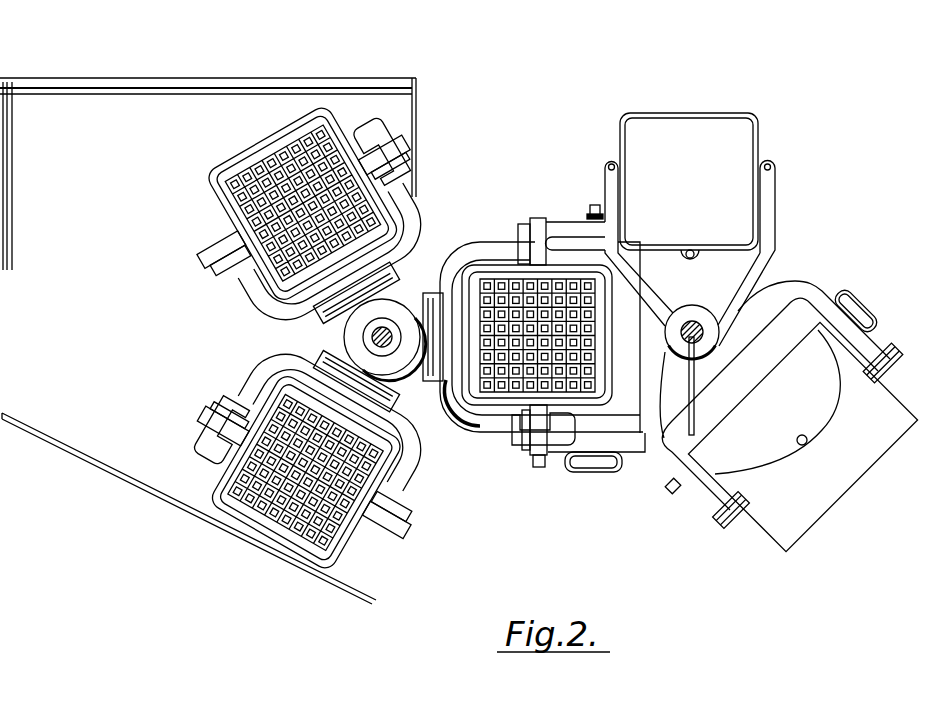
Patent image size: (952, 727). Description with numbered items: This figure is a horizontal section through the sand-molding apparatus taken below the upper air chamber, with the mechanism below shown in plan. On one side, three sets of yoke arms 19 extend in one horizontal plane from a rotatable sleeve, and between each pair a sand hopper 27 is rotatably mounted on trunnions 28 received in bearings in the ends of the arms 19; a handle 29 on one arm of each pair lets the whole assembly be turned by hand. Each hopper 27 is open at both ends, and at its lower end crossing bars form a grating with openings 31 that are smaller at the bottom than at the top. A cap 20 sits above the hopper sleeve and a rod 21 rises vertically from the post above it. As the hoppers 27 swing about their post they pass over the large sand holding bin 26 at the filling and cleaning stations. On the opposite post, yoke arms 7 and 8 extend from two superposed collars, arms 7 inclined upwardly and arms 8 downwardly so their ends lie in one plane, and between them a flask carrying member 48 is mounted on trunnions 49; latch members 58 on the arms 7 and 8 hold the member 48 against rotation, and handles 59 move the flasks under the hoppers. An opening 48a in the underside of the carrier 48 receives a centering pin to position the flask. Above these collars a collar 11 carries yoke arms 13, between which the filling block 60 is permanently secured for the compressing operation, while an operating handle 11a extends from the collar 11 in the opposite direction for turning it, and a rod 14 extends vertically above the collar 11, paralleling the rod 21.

The yoke arms 7 is at (595, 446).
The yoke arms 8 is at (818, 298).
The collar 11 is at (707, 314).
The operating handle 11a is at (694, 420).
The yoke arms 13 is at (618, 215).
The rod 14 is at (689, 322).
The yoke arms 19 is at (455, 254).
The cap 20 is at (380, 330).
The rod 21 is at (378, 307).
The sand holding bin 26 is at (155, 474).
The sand hopper 27 is at (243, 170).
The trunnions 28 is at (238, 253).
The handles 29 is at (368, 137).
The openings 31 is at (322, 133).
The flask carrying member 48 is at (767, 393).
The opening 48a is at (803, 446).
The trunnions 49 is at (884, 364).
The latch members 58 is at (590, 206).
The handles 59 is at (858, 303).
The filling block 60 is at (691, 135).